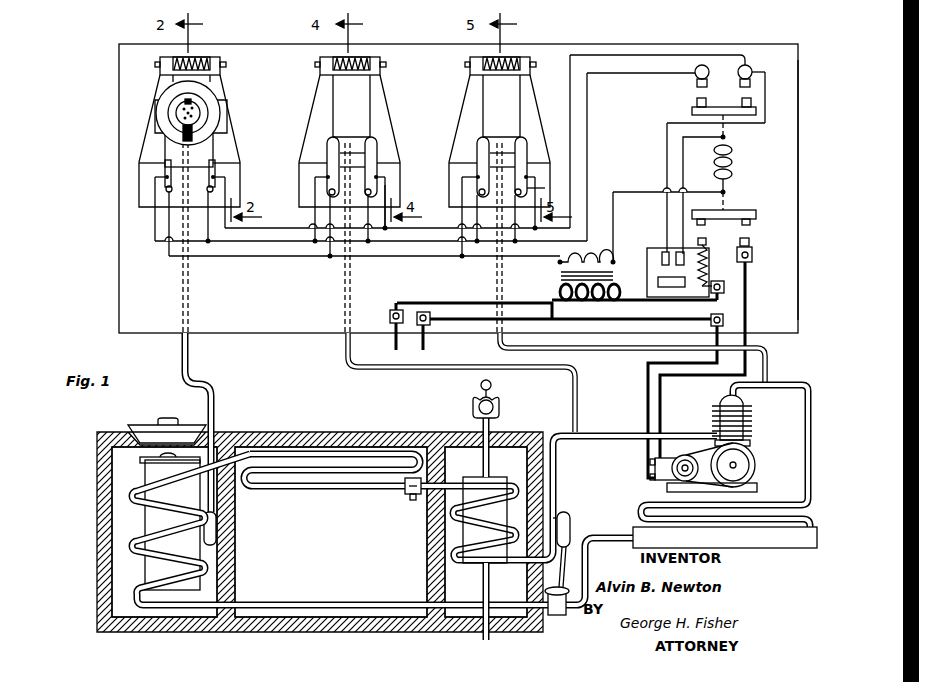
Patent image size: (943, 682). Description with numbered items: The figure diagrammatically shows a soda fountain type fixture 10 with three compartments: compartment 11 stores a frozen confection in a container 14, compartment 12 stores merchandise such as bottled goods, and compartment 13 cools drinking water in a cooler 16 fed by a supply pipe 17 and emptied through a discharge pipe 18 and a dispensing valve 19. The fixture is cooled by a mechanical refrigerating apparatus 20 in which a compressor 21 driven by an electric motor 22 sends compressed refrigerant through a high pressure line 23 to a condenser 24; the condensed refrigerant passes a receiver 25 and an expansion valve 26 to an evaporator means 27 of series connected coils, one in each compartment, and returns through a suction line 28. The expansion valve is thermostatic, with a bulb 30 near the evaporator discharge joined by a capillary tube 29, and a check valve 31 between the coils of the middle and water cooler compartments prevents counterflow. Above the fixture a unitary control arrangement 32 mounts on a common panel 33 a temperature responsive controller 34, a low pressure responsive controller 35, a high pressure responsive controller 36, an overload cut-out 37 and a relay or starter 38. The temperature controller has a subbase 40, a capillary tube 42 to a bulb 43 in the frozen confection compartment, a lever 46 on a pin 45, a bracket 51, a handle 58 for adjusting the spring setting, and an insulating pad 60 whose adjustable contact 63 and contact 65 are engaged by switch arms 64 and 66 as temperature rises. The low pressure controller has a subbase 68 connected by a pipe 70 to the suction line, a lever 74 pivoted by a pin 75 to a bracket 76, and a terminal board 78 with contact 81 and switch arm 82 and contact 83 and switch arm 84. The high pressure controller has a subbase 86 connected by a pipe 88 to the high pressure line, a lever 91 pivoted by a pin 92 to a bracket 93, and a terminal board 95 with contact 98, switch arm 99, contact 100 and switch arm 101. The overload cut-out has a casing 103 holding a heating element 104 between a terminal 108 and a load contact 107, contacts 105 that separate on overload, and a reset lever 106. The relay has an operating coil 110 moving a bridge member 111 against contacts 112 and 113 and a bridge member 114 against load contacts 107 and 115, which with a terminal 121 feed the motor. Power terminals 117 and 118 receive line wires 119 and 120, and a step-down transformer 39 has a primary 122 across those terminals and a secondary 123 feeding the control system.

The fixture 10 is at (291, 407).
The compartment 11 is at (112, 478).
The compartment 12 is at (336, 531).
The compartment 13 is at (504, 447).
The container 14 is at (155, 508).
The cooler 16 is at (498, 482).
The supply pipe 17 is at (482, 584).
The discharge pipe 18 is at (482, 460).
The dispensing valve 19 is at (475, 406).
The mechanical refrigerating apparatus 20 is at (732, 425).
The compressor 21 is at (752, 415).
The electric motor 22 is at (662, 480).
The high pressure line 23 is at (814, 456).
The condenser 24 is at (640, 508).
The receiver 25 is at (834, 524).
The expansion valve 26 is at (560, 616).
The evaporator means 27 is at (356, 492).
The low pressure or suction line 28 is at (602, 440).
The capillary tube 29 is at (569, 567).
The bulb 30 is at (572, 526).
The check valve 31 is at (409, 500).
The unitary control arrangement 32 is at (779, 36).
The panel 33 is at (798, 165).
The temperature responsive controller 34 is at (200, 150).
The low pressure responsive controller 35 is at (366, 150).
The high pressure responsive controller 36 is at (507, 150).
The overload cut-out 37 is at (682, 258).
The relay or starter 38 is at (764, 183).
The step-down transformer 39 is at (566, 272).
The subbase 40 is at (230, 144).
The capillary tube 42 is at (188, 356).
The bulb 43 is at (207, 540).
The pin 45 is at (224, 66).
The lever 46 is at (213, 88).
The bracket 51 is at (220, 116).
The handle 58 is at (176, 113).
The insulating pad 60 is at (226, 179).
The adjustable contact 63 is at (171, 221).
The switch arm 64 is at (165, 167).
The contact 65 is at (202, 213).
The switch arm 66 is at (213, 155).
The subbase 68 is at (361, 141).
The pipe 70 is at (382, 370).
The lever 74 is at (375, 106).
The pin 75 is at (367, 66).
The bracket 76 is at (361, 57).
The terminal board 78 is at (406, 195).
The adjustable contact 81 is at (337, 222).
The switch arm 82 is at (324, 189).
The contact 83 is at (363, 215).
The switch arm 84 is at (381, 182).
The subbase 86 is at (507, 141).
The pipe 88 is at (595, 348).
The lever 91 is at (521, 106).
The pin 92 is at (512, 62).
The bracket 93 is at (506, 57).
The terminal board 95 is at (546, 192).
The adjustable contact 98 is at (458, 215).
The switch arm 99 is at (474, 167).
The contact 100 is at (552, 187).
The switch arm 101 is at (532, 167).
The casing 103 is at (647, 268).
The heating element 104 is at (709, 262).
The contacts 105 is at (662, 253).
The lever 106 is at (688, 270).
The load contact 107 is at (705, 241).
The terminal 108 is at (729, 296).
The operating coil 110 is at (732, 157).
The bridge member 111 is at (692, 111).
The contact 112 is at (697, 86).
The contact 113 is at (742, 86).
The bridge member 114 is at (756, 213).
The load contact 115 is at (752, 241).
The power terminal 117 is at (390, 316).
The power terminal 118 is at (430, 320).
The line wire 119 is at (396, 346).
The line wire 120 is at (423, 346).
The terminal 121 is at (712, 322).
The primary 122 is at (590, 303).
The secondary 123 is at (596, 252).